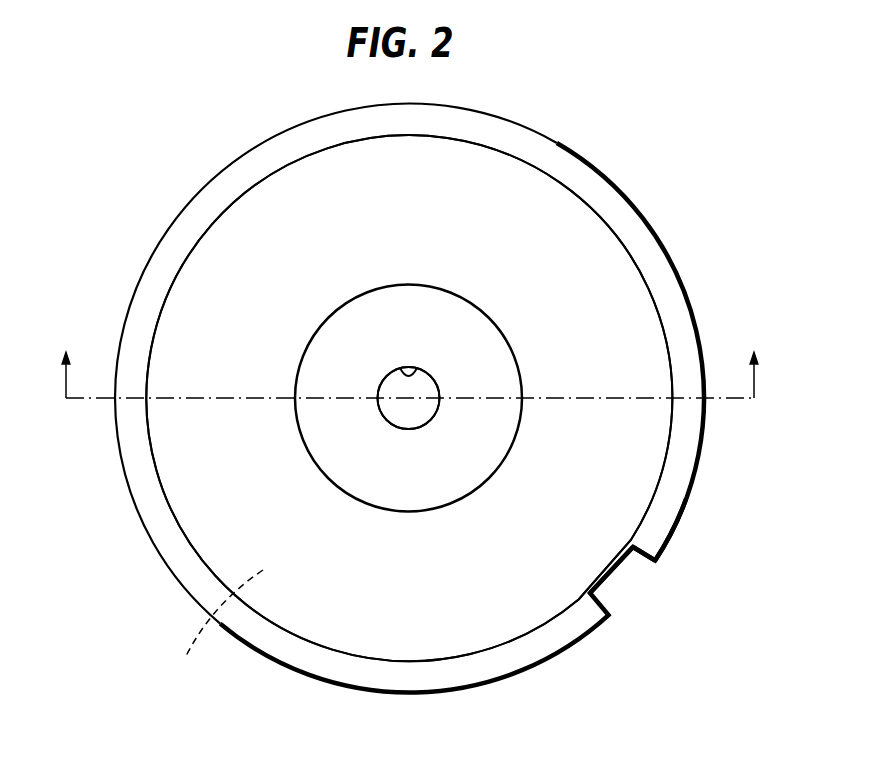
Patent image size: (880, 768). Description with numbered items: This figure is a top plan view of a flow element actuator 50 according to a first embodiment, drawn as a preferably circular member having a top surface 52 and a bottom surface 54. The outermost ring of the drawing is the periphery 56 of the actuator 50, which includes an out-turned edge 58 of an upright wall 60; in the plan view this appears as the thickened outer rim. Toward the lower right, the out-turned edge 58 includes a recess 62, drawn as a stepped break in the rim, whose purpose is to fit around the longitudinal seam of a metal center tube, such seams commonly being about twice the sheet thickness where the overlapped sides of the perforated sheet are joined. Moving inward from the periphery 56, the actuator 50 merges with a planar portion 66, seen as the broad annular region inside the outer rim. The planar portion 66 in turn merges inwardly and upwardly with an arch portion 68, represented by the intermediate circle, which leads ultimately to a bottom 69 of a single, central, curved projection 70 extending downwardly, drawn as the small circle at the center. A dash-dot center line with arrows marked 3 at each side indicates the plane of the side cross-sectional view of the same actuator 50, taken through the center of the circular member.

The flow element actuator 50 is at (166, 137).
The top surface 52 is at (572, 227).
The bottom surface 54 is at (215, 632).
The periphery 56 is at (163, 596).
The out-turned edge 58 is at (675, 537).
The upright wall 60 is at (665, 498).
The recess 62 is at (637, 553).
The planar portion 66 is at (560, 298).
The arch portion 68 is at (495, 368).
The bottom of the central curved projection 69 is at (407, 403).
The central curved projection 70 is at (412, 378).
The section line 3- 3 is at (411, 361).